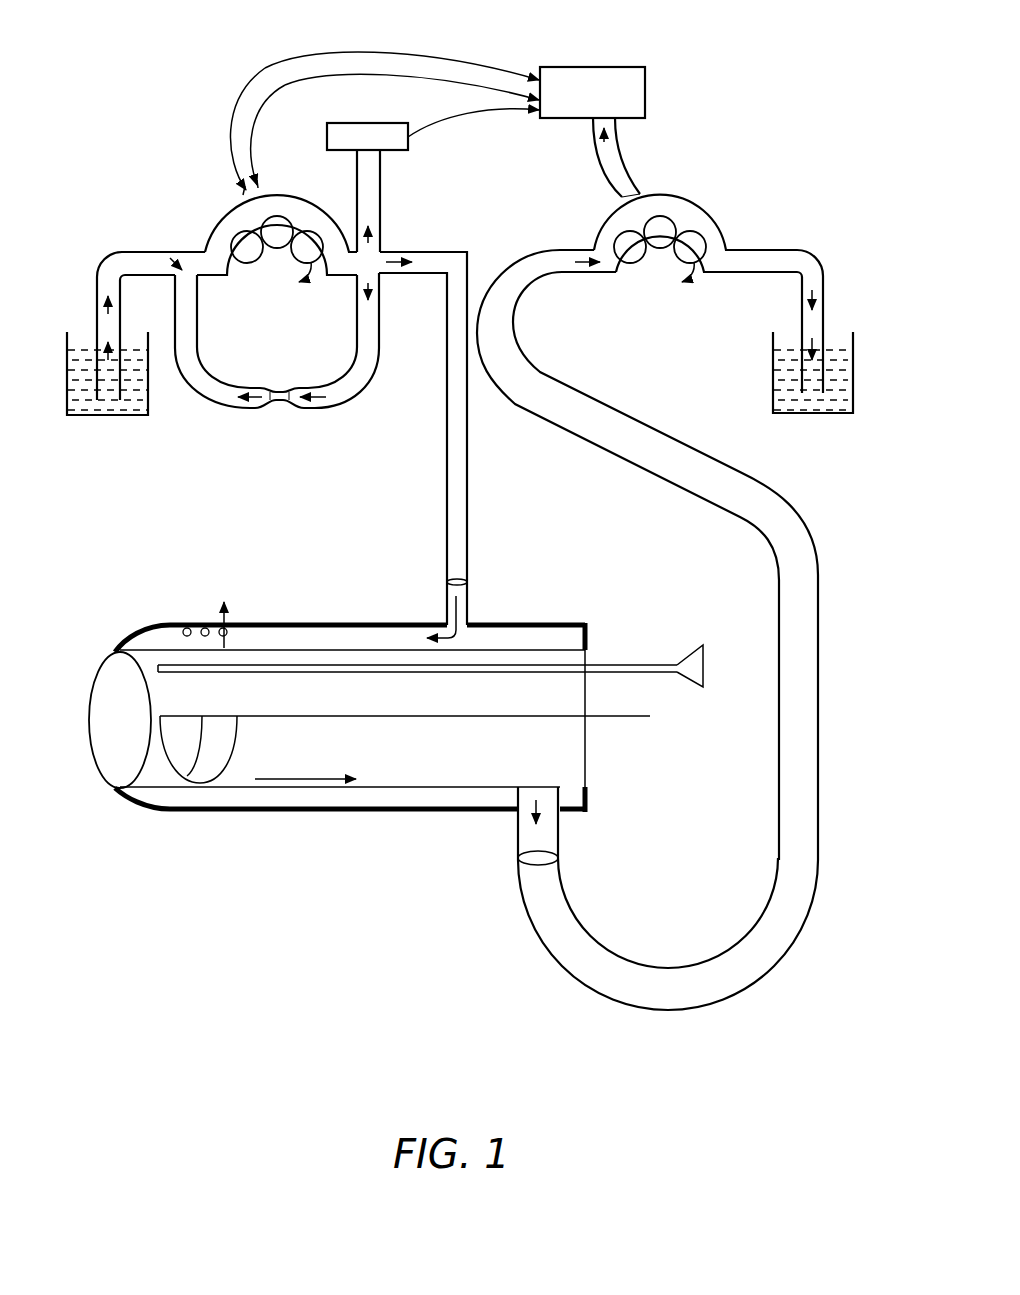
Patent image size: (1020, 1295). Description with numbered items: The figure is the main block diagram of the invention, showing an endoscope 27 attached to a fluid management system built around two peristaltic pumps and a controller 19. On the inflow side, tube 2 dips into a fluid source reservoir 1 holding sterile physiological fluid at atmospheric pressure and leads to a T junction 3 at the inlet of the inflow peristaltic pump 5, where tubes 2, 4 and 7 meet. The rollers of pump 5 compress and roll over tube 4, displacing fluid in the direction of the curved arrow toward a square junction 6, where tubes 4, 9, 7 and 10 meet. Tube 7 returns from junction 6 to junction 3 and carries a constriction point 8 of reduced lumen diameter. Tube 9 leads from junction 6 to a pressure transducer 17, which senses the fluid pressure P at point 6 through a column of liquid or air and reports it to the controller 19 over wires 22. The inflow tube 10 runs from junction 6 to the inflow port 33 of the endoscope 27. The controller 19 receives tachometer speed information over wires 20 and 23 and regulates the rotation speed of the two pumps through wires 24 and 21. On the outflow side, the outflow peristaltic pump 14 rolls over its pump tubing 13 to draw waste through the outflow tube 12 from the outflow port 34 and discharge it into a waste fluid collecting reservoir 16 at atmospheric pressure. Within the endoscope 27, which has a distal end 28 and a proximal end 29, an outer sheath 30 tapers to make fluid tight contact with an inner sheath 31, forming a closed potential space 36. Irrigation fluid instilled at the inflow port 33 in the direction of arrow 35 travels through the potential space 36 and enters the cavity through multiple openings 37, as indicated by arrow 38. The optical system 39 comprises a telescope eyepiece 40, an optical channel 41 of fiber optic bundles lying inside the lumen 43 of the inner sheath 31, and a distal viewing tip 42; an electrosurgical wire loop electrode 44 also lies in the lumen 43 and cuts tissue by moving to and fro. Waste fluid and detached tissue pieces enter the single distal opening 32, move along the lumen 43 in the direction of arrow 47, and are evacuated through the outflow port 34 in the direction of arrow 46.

The fluid source reservoir 1 is at (105, 417).
The tube 2 is at (110, 255).
The T junction 3 is at (172, 258).
The tube 4 is at (212, 225).
The inflow peristaltic pump 5 is at (250, 190).
The square junction 6 is at (368, 260).
The tube 7 is at (360, 388).
The constriction point 8 is at (276, 405).
The tube 9 is at (382, 192).
The inflow tube 10 is at (426, 274).
The outflow tube 12 is at (537, 288).
The peristaltic pump tubing 13 is at (640, 195).
The outflow peristaltic pump 14 is at (710, 205).
The waste fluid collecting reservoir 16 is at (773, 382).
The pressure transducer 17 is at (333, 150).
The controller 19 is at (647, 95).
The wire 20 is at (617, 137).
The wire 21 is at (594, 166).
The wires 22 is at (484, 112).
The wire 23 is at (253, 92).
The wire 24 is at (378, 76).
The endoscope 27 is at (249, 608).
The distal end 28 is at (117, 650).
The proximal end 29 is at (590, 625).
The outer sheath 30 is at (268, 627).
The inner sheath 31 is at (305, 648).
The opening 32 is at (107, 688).
The inflow port 33 is at (447, 607).
The outflow port 34 is at (515, 822).
The arrow 35 is at (460, 606).
The potential space 36 is at (337, 625).
The openings 37 is at (175, 627).
The arrow 38 is at (220, 611).
The optical system 39 is at (650, 664).
The telescope eyepiece 40 is at (700, 650).
The optical channel 41 is at (370, 665).
The distal viewing tip 42 is at (148, 630).
The lumen 43 is at (420, 772).
The electrosurgical wire loop electrode 44 is at (178, 786).
The arrow 46 is at (545, 812).
The arrow 47 is at (300, 800).